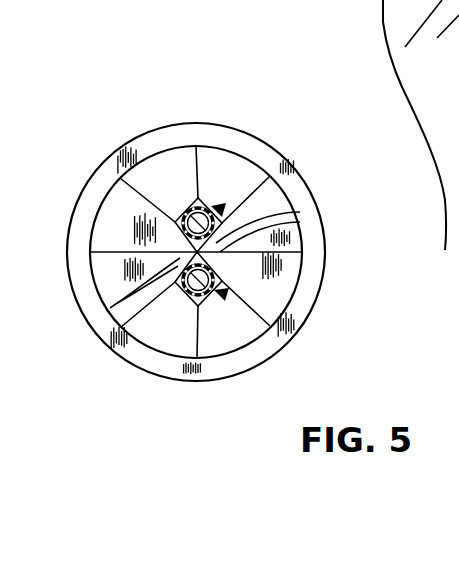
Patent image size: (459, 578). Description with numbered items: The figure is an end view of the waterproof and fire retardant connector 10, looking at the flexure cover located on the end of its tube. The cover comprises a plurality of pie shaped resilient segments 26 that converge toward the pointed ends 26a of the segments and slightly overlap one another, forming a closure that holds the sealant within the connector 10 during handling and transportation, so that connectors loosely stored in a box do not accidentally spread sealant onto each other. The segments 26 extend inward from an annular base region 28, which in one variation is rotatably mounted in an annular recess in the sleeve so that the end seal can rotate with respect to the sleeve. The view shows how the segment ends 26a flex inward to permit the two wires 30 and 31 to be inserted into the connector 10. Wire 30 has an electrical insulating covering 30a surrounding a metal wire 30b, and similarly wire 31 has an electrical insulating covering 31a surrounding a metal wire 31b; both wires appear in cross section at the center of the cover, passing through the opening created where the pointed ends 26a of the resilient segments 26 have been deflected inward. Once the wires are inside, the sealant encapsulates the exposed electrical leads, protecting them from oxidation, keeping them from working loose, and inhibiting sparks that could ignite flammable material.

The connector 10 is at (95, 131).
The pie shaped resilient segments 26 is at (178, 158).
The pointed end of segments 26a is at (300, 212).
The annular base region 28 is at (188, 370).
The wire 30 is at (279, 150).
The electrical insulating covering 30a is at (176, 220).
The metal wire 30b is at (214, 196).
The wire 31 is at (272, 354).
The electrical insulating covering 31a is at (175, 286).
The metal wire 31b is at (217, 293).